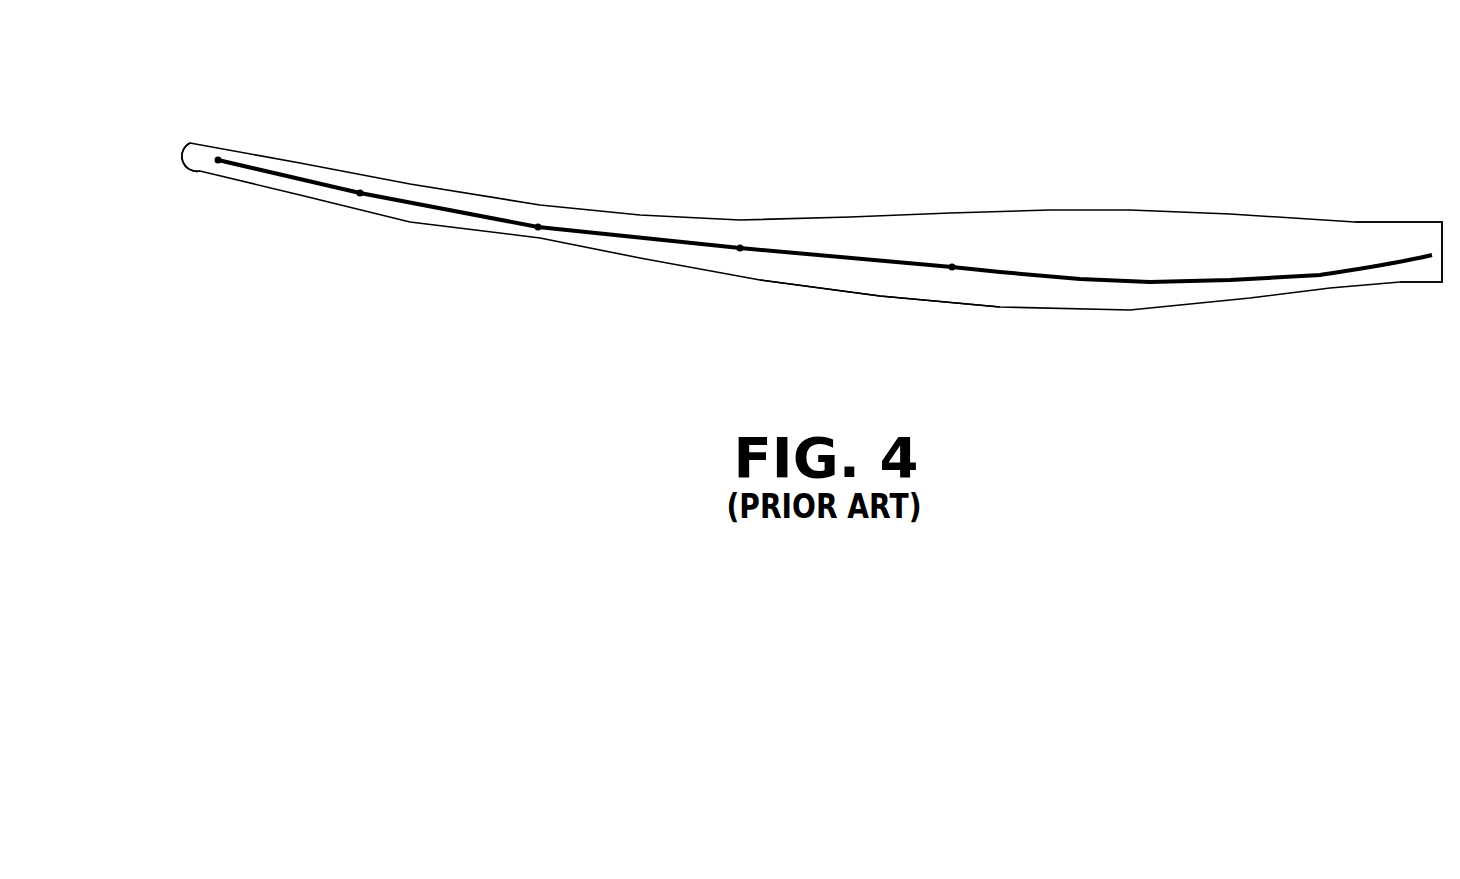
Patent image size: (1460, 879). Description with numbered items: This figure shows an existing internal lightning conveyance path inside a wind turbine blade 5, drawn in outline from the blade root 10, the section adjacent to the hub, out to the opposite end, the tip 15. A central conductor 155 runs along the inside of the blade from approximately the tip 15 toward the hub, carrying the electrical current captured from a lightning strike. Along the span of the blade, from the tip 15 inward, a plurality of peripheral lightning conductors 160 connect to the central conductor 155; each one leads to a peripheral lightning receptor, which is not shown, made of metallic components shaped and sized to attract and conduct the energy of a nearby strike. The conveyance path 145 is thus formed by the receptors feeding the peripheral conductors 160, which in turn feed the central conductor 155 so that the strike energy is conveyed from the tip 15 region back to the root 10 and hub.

The wind turbine blade 5 is at (1082, 184).
The blade root 10 is at (1342, 237).
The tip 15 is at (180, 141).
The sensor line / spar 145 is at (764, 58).
The central conductor 155 is at (1187, 287).
The peripheral lightning conductors 160 is at (218, 158).